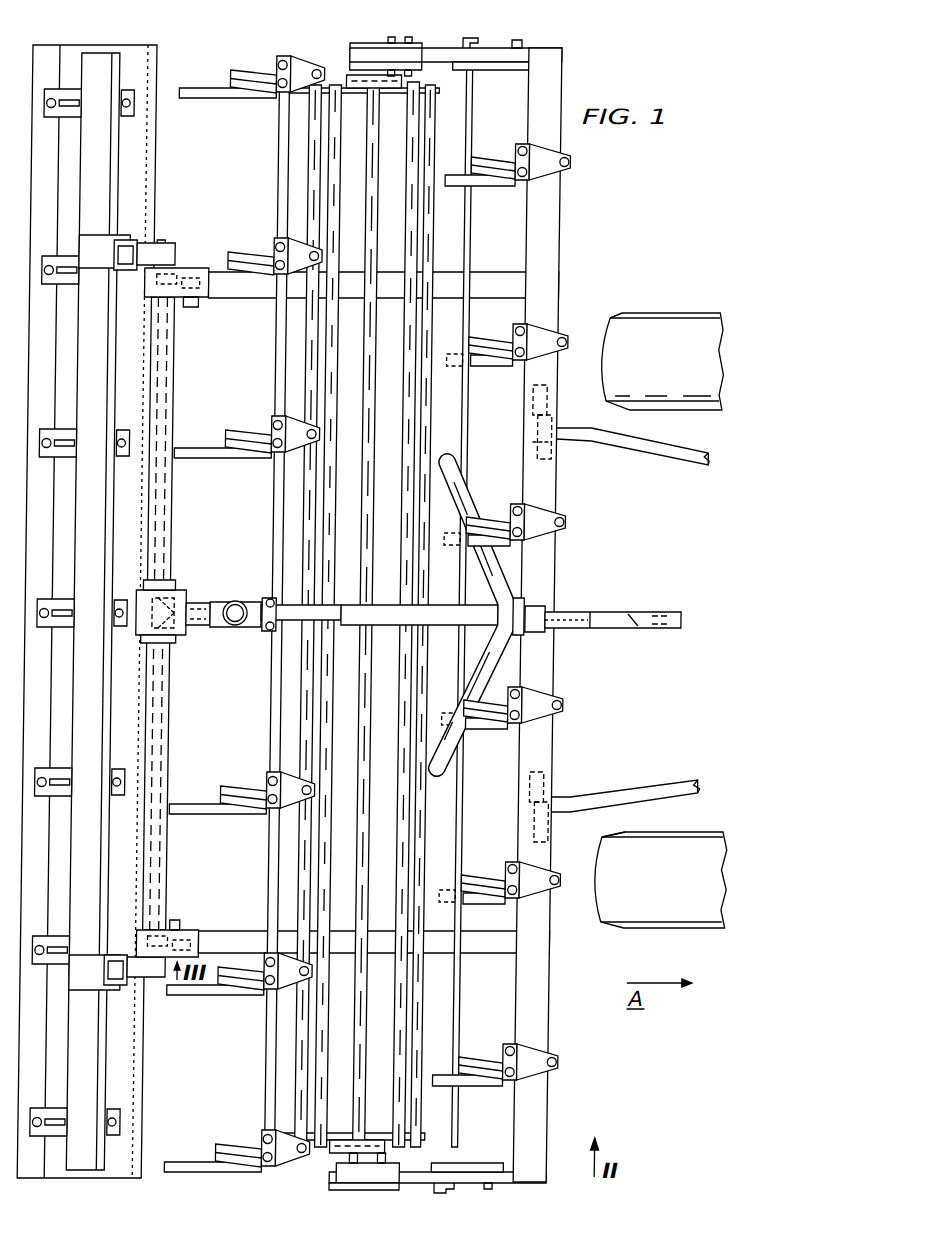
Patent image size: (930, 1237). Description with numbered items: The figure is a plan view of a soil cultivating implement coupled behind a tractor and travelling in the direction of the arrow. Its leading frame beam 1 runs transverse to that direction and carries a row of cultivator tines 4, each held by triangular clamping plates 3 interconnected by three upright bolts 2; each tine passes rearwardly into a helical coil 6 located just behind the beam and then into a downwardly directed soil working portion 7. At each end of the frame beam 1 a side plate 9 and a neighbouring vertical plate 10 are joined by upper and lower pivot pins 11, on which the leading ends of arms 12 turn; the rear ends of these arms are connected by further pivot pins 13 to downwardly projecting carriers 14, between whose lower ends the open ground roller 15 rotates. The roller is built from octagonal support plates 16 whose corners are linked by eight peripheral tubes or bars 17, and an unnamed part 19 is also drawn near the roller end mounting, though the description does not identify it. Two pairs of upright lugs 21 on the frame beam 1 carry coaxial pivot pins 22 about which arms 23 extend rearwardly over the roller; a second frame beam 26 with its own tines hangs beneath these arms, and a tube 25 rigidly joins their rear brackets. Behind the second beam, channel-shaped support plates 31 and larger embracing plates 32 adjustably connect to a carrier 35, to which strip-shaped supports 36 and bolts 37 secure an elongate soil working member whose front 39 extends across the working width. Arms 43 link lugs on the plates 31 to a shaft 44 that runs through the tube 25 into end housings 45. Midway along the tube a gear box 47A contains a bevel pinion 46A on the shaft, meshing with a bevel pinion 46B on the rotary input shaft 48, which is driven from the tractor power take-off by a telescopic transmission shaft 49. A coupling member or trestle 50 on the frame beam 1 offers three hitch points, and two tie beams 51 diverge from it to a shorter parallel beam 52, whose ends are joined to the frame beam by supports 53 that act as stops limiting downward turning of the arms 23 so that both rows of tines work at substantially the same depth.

The frame beam 1 is at (564, 224).
The upright bolts 2 is at (525, 332).
The clamping plates 3 is at (547, 174).
The cultivator tines 4 is at (236, 104).
The helical coil 6 is at (260, 456).
The soil working portion 7 is at (207, 458).
The side plates 9 is at (563, 52).
The vertical plate 10 is at (488, 70).
The pivot pins 11 is at (510, 70).
The upper and lower arms 12 is at (458, 70).
The pivot pins 13 is at (445, 1163).
The carriers 14 is at (350, 49).
The ground roller 15 is at (439, 235).
The support plates 16 is at (357, 93).
The tubes or bars 17 is at (397, 1020).
The bracket 19 is at (448, 630).
The upright lugs 21 is at (564, 292).
The pivot pin 22 is at (552, 267).
The arms 23 is at (262, 298).
The tube 25 is at (174, 720).
The second frame beam 26 is at (284, 688).
The support plates 31 is at (130, 240).
The support plates 32 is at (95, 235).
The carrier 35 is at (120, 177).
The strip-shaped supports 36 is at (130, 92).
The bolts 37 is at (47, 458).
The front 39 is at (157, 190).
The arms 43 is at (178, 250).
The shaft 44 is at (165, 240).
The housings 45 is at (190, 268).
The bevel pinion 46A is at (146, 642).
The bevel pinion 46B is at (182, 590).
The gear box 47A is at (196, 628).
The rotary input shaft 48 is at (226, 602).
The telescopic transmission shaft 49 is at (354, 625).
The coupling member or trestle 50 is at (566, 582).
The tie beams 51 is at (490, 562).
The beam 52 is at (461, 808).
The supports 53 is at (512, 272).